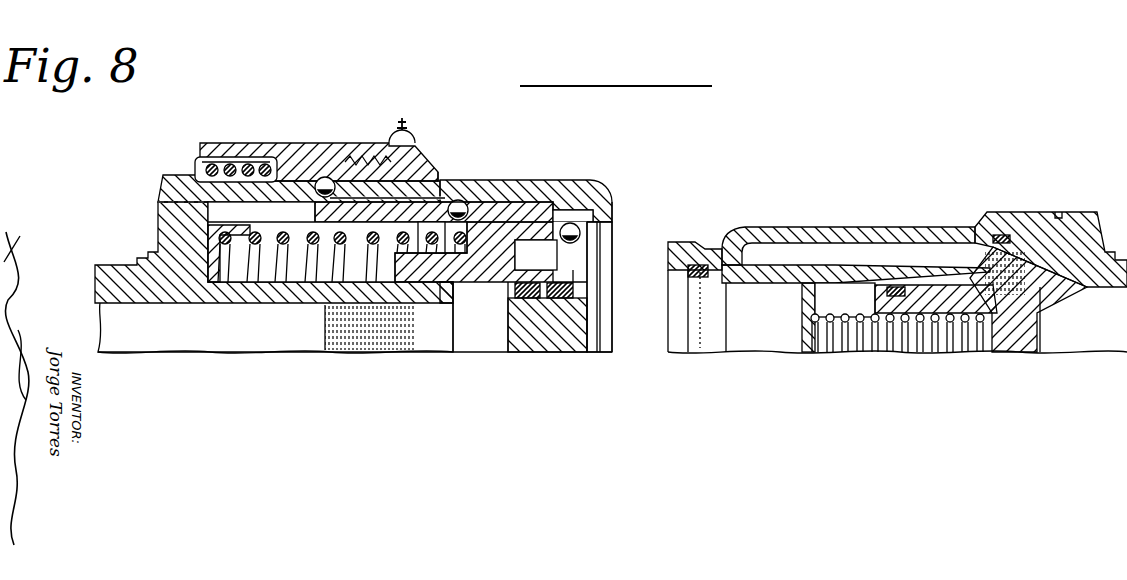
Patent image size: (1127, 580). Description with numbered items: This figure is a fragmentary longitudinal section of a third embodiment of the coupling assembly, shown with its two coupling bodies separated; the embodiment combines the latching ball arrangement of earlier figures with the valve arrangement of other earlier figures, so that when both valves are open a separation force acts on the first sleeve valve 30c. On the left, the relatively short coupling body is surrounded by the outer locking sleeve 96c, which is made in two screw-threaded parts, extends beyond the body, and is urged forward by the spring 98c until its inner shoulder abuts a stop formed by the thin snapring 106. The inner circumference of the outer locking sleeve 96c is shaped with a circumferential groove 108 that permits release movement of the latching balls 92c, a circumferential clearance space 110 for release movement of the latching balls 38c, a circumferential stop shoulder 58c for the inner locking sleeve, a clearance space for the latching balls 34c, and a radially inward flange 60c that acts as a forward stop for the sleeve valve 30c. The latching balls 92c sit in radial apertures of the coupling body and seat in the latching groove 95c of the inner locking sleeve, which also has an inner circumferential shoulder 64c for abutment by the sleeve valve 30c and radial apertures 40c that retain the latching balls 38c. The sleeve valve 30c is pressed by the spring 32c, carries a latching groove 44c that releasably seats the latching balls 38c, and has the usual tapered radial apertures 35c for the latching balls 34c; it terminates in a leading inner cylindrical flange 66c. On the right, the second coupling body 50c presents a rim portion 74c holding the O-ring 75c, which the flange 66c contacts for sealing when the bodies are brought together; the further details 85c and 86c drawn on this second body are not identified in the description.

The sleeve valve 30c is at (493, 287).
The spring 32c is at (281, 262).
The latching balls 34c is at (536, 255).
The tapered radial apertures 35c is at (606, 196).
The latching balls 38c is at (474, 196).
The radial apertures 40c is at (459, 200).
The latching groove 44c is at (503, 223).
The second coupling body 50c is at (878, 227).
The circumferential stop shoulder 58c is at (565, 222).
The radially inward flange 60c is at (603, 232).
The inner circumferential shoulder 64c is at (398, 304).
The leading inner cylindrical flange 66c is at (558, 272).
The rim portion 74c is at (684, 244).
The O-ring 75c is at (698, 270).
The spring fingers 85c is at (805, 342).
The wedge member 86c is at (1042, 303).
The latching balls 92c is at (318, 192).
The latching groove 95c is at (440, 174).
The outer locking sleeve 96c is at (397, 130).
The spring 98c is at (250, 166).
The thin snapring 106 is at (327, 178).
The circumferential groove 108 is at (309, 160).
The circumferential clearance space 110 is at (500, 200).